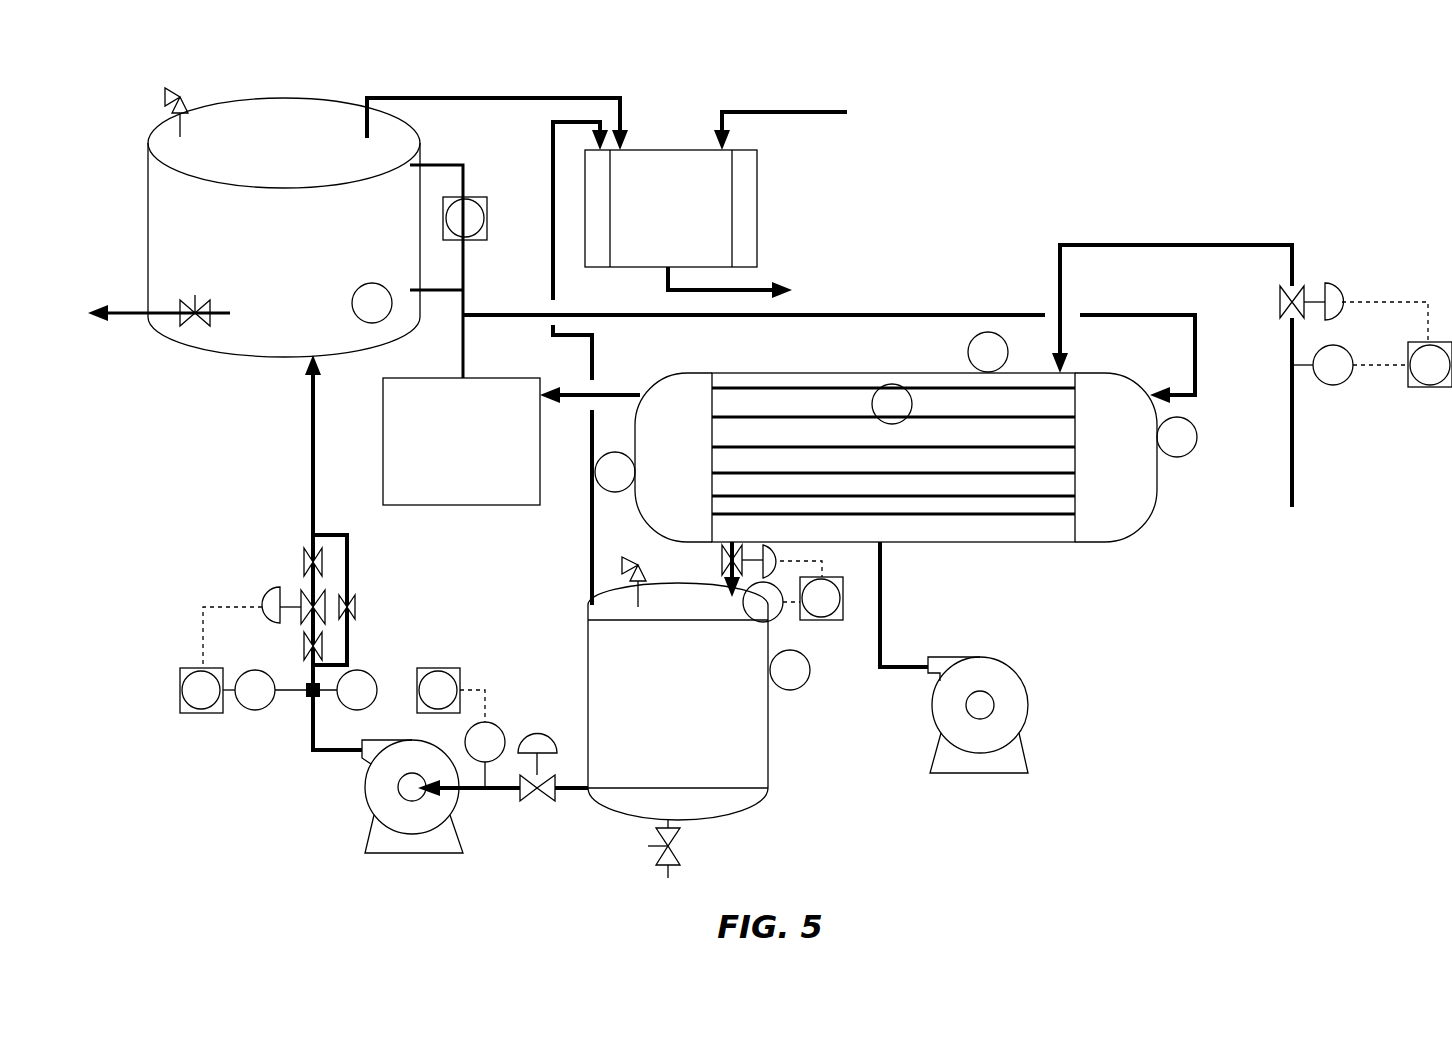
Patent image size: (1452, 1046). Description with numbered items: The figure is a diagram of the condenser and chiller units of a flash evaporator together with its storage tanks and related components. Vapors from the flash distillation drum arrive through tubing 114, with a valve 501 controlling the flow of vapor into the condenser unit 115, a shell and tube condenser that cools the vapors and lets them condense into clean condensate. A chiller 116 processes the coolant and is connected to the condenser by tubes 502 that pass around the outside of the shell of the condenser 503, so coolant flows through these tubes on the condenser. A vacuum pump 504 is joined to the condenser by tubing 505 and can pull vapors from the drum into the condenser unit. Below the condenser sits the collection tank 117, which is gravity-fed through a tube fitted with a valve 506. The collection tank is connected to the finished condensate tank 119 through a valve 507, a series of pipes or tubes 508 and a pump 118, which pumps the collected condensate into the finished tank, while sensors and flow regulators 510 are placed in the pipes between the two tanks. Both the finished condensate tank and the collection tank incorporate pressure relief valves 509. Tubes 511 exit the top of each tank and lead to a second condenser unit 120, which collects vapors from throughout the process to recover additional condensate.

The tubing 114 is at (1132, 245).
The condenser unit 115 is at (988, 545).
The chiller 116 is at (511, 441).
The collection tank 117 is at (681, 601).
The pump 118 is at (410, 845).
The finished condensate tank 119 is at (254, 227).
The second condenser unit 120 is at (777, 205).
The valve 501 is at (1335, 283).
The tubes 502 is at (625, 393).
The shell of the condenser 503 is at (1048, 573).
The vacuum pump 504 is at (950, 752).
The tubing 505 is at (885, 592).
The valve 506 is at (775, 572).
The valve 507 is at (535, 735).
The pipes or tubes 508 is at (313, 436).
The pressure relief valves 509 is at (165, 96).
The sensors and flow regulators 510 is at (282, 572).
The tubes 511 is at (507, 98).